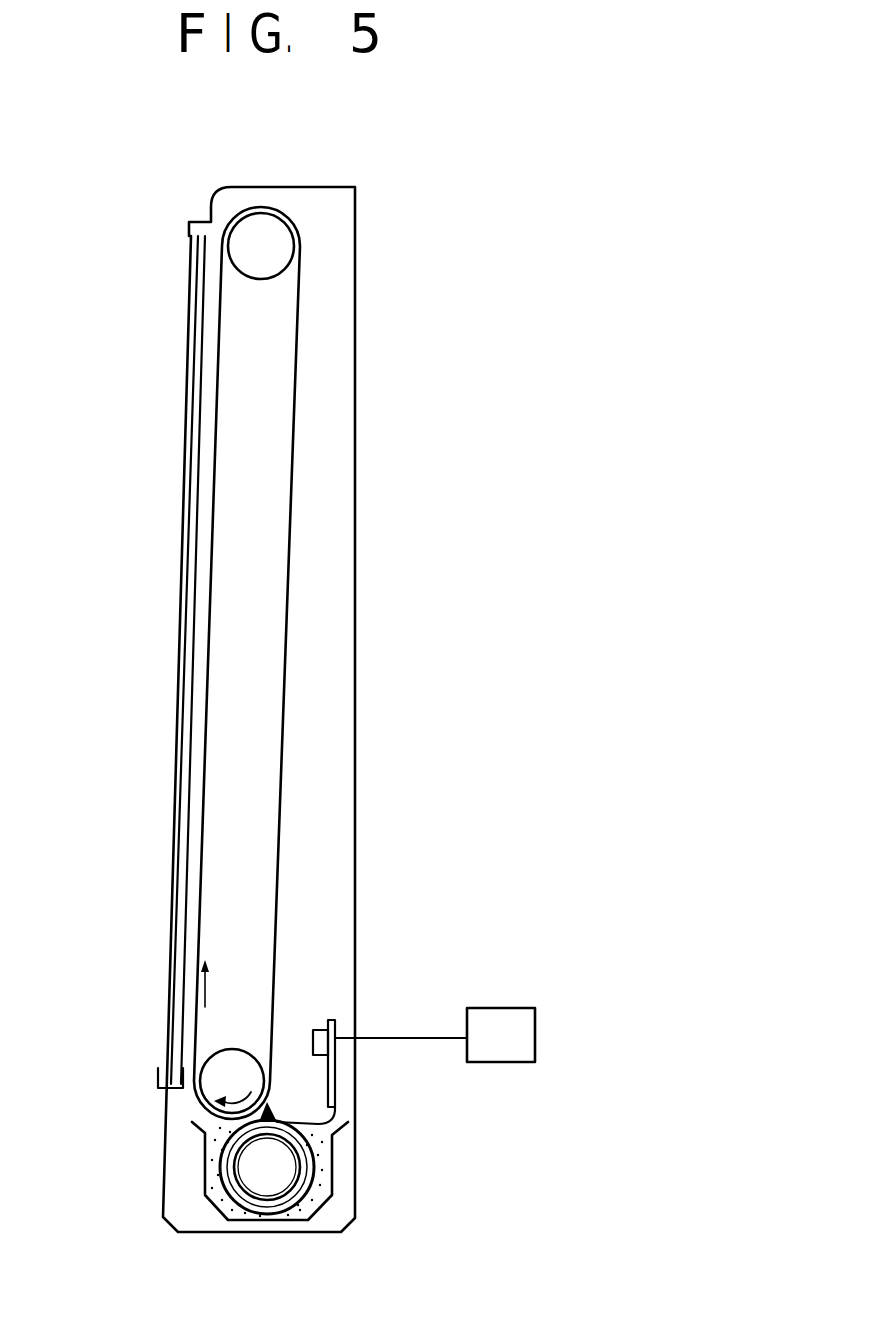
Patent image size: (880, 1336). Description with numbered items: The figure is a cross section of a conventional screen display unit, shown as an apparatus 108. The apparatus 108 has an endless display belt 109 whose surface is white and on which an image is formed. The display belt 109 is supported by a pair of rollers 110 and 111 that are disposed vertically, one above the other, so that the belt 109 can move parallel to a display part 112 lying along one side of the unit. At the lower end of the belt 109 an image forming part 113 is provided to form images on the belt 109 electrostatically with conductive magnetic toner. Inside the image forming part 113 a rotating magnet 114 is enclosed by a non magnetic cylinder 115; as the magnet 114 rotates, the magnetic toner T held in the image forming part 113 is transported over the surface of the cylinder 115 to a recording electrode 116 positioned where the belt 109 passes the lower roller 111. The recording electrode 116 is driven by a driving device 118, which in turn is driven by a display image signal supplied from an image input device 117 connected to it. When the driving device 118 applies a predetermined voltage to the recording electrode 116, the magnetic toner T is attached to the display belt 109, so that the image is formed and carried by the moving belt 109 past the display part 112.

The apparatus 108 is at (355, 330).
The display belt 109 is at (285, 768).
The roller 110 is at (281, 249).
The roller 111 is at (234, 1064).
The display part 112 is at (168, 672).
The image forming part 113 is at (337, 1150).
The rotating magnet 114 is at (281, 1193).
The non magnetic cylinder 115 is at (302, 1183).
The recording electrode 116 is at (278, 1110).
The image input device 117 is at (505, 1020).
The driving device 118 is at (317, 1030).
The magnetic toner T is at (226, 1205).